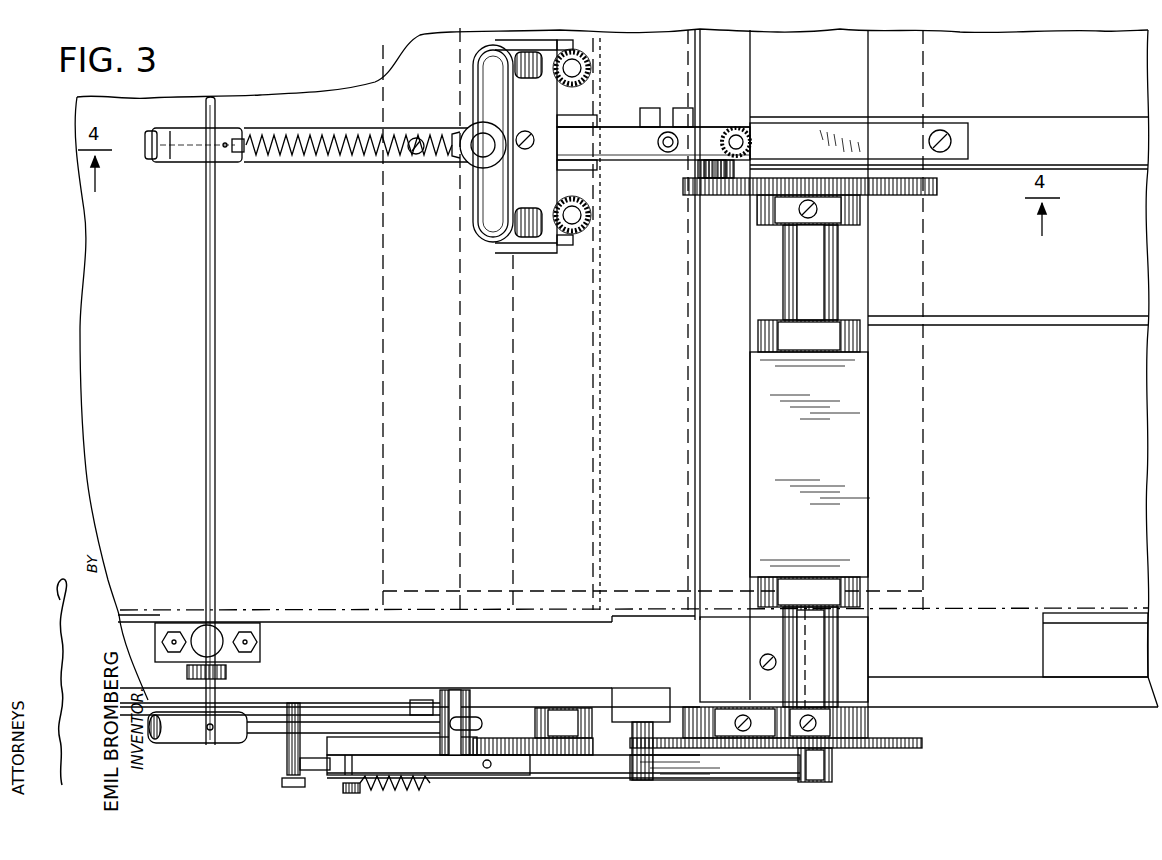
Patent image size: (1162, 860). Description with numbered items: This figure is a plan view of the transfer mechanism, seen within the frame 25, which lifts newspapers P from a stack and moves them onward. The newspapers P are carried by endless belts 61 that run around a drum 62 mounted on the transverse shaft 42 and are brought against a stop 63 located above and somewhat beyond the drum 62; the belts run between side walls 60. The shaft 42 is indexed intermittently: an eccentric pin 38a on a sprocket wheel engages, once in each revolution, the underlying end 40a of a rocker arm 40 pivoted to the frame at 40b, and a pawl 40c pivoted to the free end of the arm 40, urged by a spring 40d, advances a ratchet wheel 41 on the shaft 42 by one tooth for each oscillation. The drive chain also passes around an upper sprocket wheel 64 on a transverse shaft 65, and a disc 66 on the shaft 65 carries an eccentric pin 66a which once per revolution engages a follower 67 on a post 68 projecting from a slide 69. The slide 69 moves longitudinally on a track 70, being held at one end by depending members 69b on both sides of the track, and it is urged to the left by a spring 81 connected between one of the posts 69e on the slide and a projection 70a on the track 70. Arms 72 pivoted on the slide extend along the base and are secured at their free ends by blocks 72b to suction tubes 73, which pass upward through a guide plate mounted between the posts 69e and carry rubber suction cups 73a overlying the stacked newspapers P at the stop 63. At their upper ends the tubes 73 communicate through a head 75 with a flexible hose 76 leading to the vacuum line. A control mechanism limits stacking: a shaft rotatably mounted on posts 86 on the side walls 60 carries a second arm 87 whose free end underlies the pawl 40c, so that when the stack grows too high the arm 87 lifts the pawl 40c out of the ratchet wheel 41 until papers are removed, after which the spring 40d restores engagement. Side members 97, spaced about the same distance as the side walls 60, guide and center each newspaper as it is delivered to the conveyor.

The machine frame 25 is at (297, 79).
The eccentric pin 38a is at (832, 766).
The rocker arm 40 is at (612, 762).
The underlying end of rocker arm 40a is at (727, 760).
The pivot of rocker arm 40b is at (344, 790).
The pawl 40c is at (458, 760).
The spring 40d is at (380, 788).
The ratchet wheel 41 is at (545, 758).
The transverse shaft 42 is at (460, 487).
The side walls 60 is at (420, 622).
The endless belts 61 is at (300, 612).
The drum 62 is at (367, 592).
The stop 63 is at (698, 502).
The upper sprocket wheel 64 is at (912, 750).
The transverse shaft 65 is at (826, 647).
The disc 66 is at (935, 192).
The eccentric pin 66a is at (738, 165).
The follower 67 is at (742, 130).
The post 68 is at (667, 132).
The slide 69 is at (650, 160).
The members 69b is at (686, 118).
The blocks or posts 69e is at (574, 152).
The track 70 is at (840, 132).
The projection 70a is at (292, 155).
The arms 72 is at (612, 122).
The blocks 72b is at (576, 44).
The suction tubes 73 is at (578, 62).
The rubber suction cups 73a is at (588, 74).
The head 75 is at (488, 216).
The flexible hose 76 is at (468, 155).
The spring 81 is at (343, 155).
The posts 86 is at (217, 352).
The second arm 87 is at (270, 742).
The side members 97 is at (1092, 620).
The newspapers P is at (650, 603).